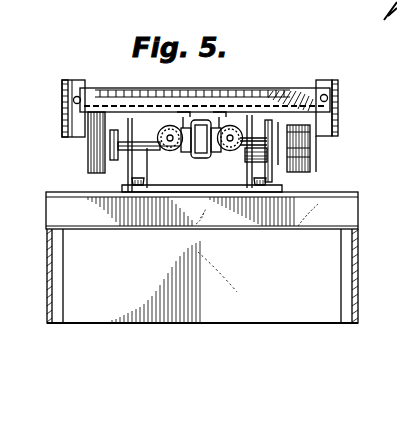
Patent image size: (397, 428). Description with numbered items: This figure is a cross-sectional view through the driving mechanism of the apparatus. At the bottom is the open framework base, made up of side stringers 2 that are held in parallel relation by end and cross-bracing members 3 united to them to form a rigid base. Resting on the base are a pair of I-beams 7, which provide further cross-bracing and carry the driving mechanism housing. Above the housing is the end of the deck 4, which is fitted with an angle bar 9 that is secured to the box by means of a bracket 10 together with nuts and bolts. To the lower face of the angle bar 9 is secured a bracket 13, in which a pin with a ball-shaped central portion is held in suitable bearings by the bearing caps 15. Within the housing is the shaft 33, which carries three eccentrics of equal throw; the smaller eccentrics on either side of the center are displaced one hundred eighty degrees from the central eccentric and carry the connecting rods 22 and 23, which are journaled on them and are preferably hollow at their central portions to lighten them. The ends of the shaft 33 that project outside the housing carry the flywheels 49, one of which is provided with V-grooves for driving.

The side stringers 2 is at (48, 306).
The end and cross-bracing members 3 is at (108, 322).
The deck 4 is at (338, 90).
The I-beams 7 is at (346, 198).
The angle bar 9 is at (300, 96).
The bracket 10 is at (79, 88).
The bracket 13 is at (214, 112).
The bearing caps 15 is at (192, 162).
The connecting rod 22 is at (160, 135).
The connecting rod 23 is at (230, 158).
The shaft 33 is at (90, 152).
The flywheels 49 is at (92, 184).